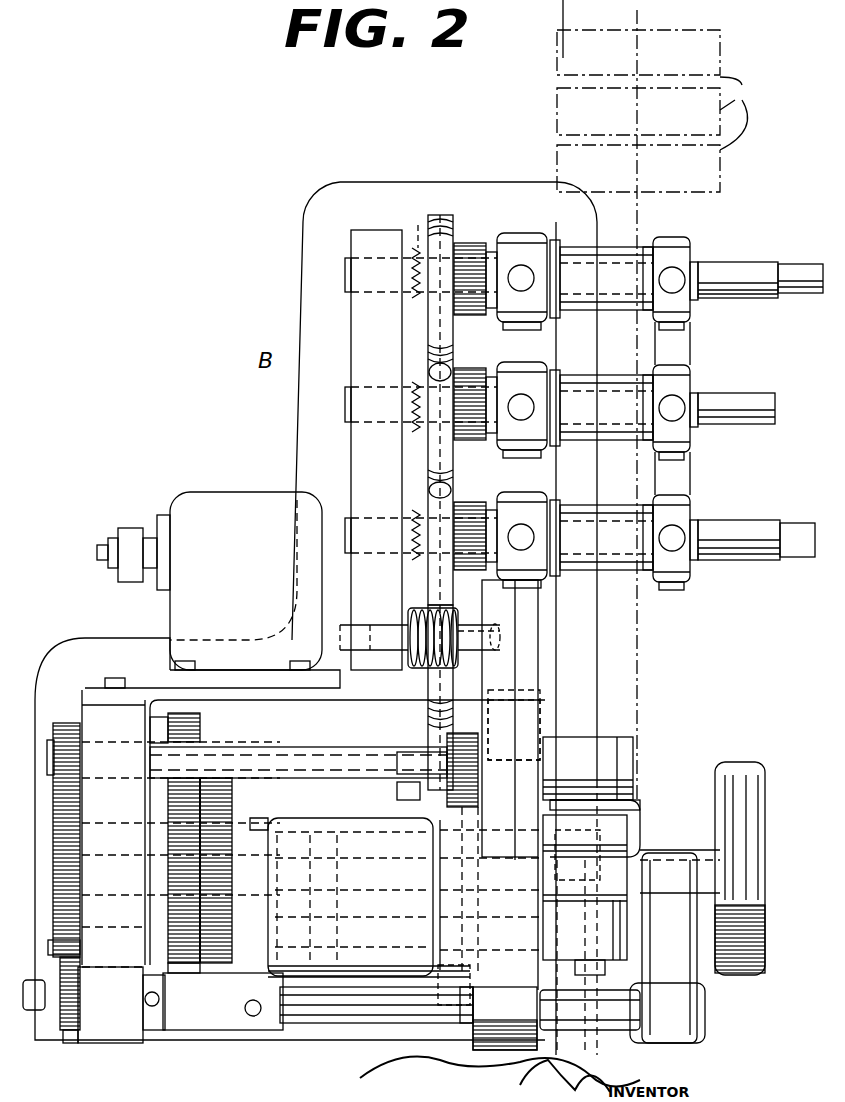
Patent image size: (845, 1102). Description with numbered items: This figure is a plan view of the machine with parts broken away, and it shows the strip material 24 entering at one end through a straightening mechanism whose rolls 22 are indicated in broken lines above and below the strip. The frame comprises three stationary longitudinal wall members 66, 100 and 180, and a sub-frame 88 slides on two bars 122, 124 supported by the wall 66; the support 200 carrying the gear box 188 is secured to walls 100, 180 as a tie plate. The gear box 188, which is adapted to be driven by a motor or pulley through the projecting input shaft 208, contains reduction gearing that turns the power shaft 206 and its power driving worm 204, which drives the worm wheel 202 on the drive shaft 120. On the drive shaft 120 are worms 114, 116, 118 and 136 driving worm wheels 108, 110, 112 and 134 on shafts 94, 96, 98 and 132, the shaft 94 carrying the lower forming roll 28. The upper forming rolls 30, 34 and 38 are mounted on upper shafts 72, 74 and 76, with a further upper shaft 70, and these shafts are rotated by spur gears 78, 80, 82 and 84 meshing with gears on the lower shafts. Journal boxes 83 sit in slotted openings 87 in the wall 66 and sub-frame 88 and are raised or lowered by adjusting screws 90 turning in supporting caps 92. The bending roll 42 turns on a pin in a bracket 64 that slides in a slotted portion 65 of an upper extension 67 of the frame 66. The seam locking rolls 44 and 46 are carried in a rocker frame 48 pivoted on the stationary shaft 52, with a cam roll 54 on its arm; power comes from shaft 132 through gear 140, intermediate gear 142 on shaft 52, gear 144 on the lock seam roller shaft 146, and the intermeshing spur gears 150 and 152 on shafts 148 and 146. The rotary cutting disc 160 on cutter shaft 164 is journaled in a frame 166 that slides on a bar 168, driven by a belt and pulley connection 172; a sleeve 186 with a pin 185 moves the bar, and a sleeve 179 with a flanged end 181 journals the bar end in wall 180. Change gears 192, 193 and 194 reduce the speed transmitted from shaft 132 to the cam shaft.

The rolls 22 is at (664, 111).
The material strip 24 is at (640, 20).
The lower forming roll 28 is at (618, 248).
The upper forming roll 30 is at (618, 386).
The upper forming roll 34 is at (618, 515).
The upper forming roll 38 is at (615, 745).
The bending roll 42 is at (640, 820).
The seam locking roll 44 is at (667, 948).
The seam locking roll 46 is at (592, 964).
The rocker frame 48 is at (352, 782).
The stationary shaft 52 is at (112, 855).
The cam roll 54 is at (470, 982).
The bracket 64 is at (628, 802).
The slotted portion 65 is at (540, 692).
The wall member 66 is at (538, 456).
The upper extension 67 is at (535, 720).
The upper shaft 70 is at (758, 298).
The upper shaft 72 is at (775, 384).
The upper shaft 74 is at (772, 525).
The upper shaft 76 is at (306, 747).
The spur gear 78 is at (475, 269).
The spur gear 80 is at (475, 397).
The spur gear 82 is at (475, 525).
The journal box 83 is at (558, 246).
The spur gear 84 is at (465, 762).
The slotted opening 87 is at (530, 245).
The sub-frame 88 is at (690, 474).
The adjusting screw 90 is at (680, 276).
The supporting cap 92 is at (684, 328).
The shaft 94 is at (345, 280).
The shaft 96 is at (345, 405).
The shaft 98 is at (345, 520).
The wall member 100 is at (351, 462).
The worm wheel 108 is at (455, 226).
The worm wheel 110 is at (452, 362).
The worm wheel 112 is at (480, 474).
The worm 114 is at (420, 240).
The worm 116 is at (402, 390).
The worm 118 is at (402, 520).
The drive shaft 120 is at (425, 700).
The bar 122 is at (796, 264).
The bar 124 is at (798, 557).
The shaft 132 is at (80, 780).
The worm wheel 134 is at (461, 711).
The worm 136 is at (386, 793).
The gear 140 is at (200, 725).
The intermediate gear 142 is at (232, 790).
The gear 144 is at (212, 968).
The lock seam roller shaft 146 is at (386, 960).
The shaft 148 is at (354, 897).
The spur gear 150 is at (277, 822).
The spur gear 152 is at (304, 1023).
The rotary cutting disc 160 is at (765, 826).
The cutter shaft 164 is at (765, 872).
The frame 166 is at (665, 850).
The sliding bar 168 is at (467, 1025).
The belt and pulley connection 172 is at (575, 1042).
The sleeve 179 is at (68, 1046).
The wall member 180 is at (100, 1045).
The flanged end 181 is at (52, 1028).
The pin 185 is at (232, 1032).
The sleeve 186 is at (258, 1030).
The gear box 188 is at (258, 492).
The change gear 192 is at (66, 723).
The intermediate gear 193 is at (70, 800).
The gear 194 is at (70, 948).
The support 200 is at (140, 688).
The worm wheel 202 is at (390, 623).
The power driving worm 204 is at (408, 666).
The power shaft 206 is at (472, 630).
The motor output shaft 208 is at (130, 528).